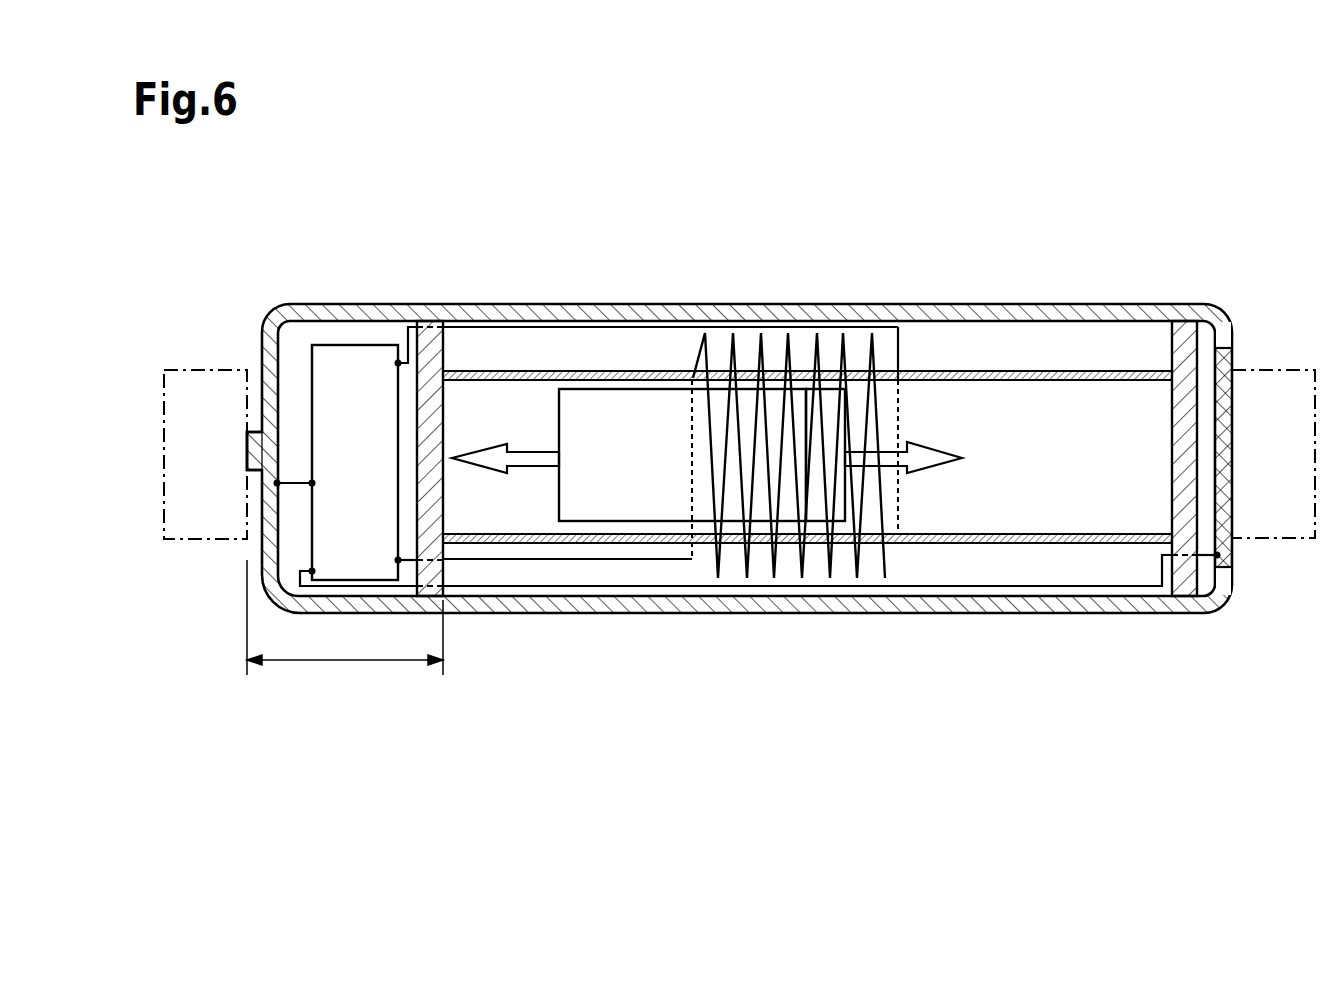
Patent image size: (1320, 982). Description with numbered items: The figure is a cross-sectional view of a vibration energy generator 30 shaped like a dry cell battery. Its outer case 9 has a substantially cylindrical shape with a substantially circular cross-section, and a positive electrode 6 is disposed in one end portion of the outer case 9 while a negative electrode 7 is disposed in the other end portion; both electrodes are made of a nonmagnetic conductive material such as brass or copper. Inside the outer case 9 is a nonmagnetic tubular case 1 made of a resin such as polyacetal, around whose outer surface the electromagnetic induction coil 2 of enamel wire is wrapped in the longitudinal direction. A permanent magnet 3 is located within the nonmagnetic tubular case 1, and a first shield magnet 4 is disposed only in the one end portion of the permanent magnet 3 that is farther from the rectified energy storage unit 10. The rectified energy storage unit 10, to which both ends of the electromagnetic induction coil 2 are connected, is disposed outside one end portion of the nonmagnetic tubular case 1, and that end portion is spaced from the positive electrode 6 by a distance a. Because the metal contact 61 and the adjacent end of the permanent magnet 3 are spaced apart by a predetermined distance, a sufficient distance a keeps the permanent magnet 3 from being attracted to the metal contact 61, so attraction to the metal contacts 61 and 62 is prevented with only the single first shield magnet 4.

The nonmagnetic tubular case 1 is at (1073, 372).
The electromagnetic induction coil 2 is at (893, 557).
The permanent magnet 3 is at (622, 390).
The first shield magnet 4 is at (832, 398).
The positive electrode 6 is at (270, 393).
The negative electrode 7 is at (1228, 388).
The outer case 9 is at (595, 312).
The rectified energy storage unit 10 is at (362, 358).
The vibration energy generator 30 is at (776, 219).
The metal contact 61 is at (181, 388).
The metal contact 62 is at (1295, 375).